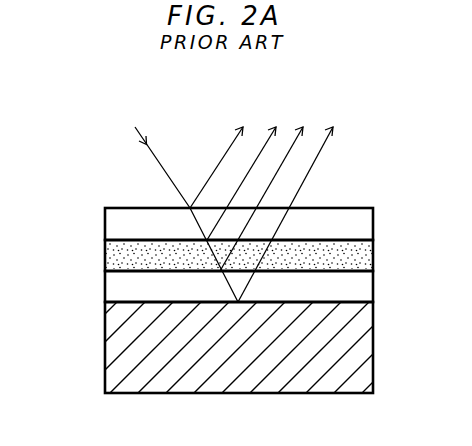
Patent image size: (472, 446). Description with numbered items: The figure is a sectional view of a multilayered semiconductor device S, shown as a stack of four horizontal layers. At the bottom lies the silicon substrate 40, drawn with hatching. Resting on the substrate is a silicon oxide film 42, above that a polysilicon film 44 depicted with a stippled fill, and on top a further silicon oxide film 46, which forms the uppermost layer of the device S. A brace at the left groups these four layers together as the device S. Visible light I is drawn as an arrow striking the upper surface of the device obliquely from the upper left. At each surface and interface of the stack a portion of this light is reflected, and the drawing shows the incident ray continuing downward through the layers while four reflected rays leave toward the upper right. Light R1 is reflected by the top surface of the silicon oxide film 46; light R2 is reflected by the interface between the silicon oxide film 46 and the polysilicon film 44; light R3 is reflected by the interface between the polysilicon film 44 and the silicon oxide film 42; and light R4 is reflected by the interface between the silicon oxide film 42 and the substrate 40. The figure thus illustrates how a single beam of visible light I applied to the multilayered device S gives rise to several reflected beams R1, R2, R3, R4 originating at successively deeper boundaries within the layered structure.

The silicon substrate 40 is at (107, 347).
The silicon oxide film 42 is at (107, 289).
The polysilicon film 44 is at (107, 248).
The silicon oxide film 46 is at (105, 228).
The multilayered semiconductor device S is at (34, 210).
The visible light I is at (179, 201).
The light reflected by the silicon oxide film R1 is at (218, 154).
The light reflected at the silicon oxide film/polysilicon film interface R2 is at (247, 171).
The light reflected at the polysilicon film/silicon oxide film interface R3 is at (272, 187).
The light reflected at the silicon oxide film/substrate interface R4 is at (299, 202).